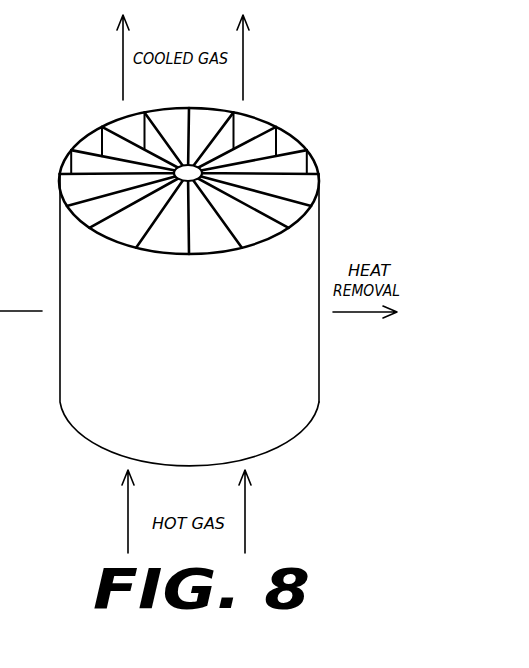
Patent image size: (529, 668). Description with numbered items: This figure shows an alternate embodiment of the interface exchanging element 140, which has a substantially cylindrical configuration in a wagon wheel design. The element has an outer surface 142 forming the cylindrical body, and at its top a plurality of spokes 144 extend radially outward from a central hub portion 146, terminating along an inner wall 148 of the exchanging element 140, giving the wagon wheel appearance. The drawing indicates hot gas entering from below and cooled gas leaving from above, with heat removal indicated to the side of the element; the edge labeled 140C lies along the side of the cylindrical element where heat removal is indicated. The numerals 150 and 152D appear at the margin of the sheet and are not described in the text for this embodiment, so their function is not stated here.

The interface exchanging element 140 is at (277, 78).
The cylindrical housing wall 140C is at (322, 222).
The outer surface 142 is at (80, 252).
The spokes 144 is at (122, 118).
The central hub portion 146 is at (186, 168).
The inner wall 148 is at (288, 140).
The adjacent element 150 is at (0, 483).
The adjacent element 152D is at (0, 600).